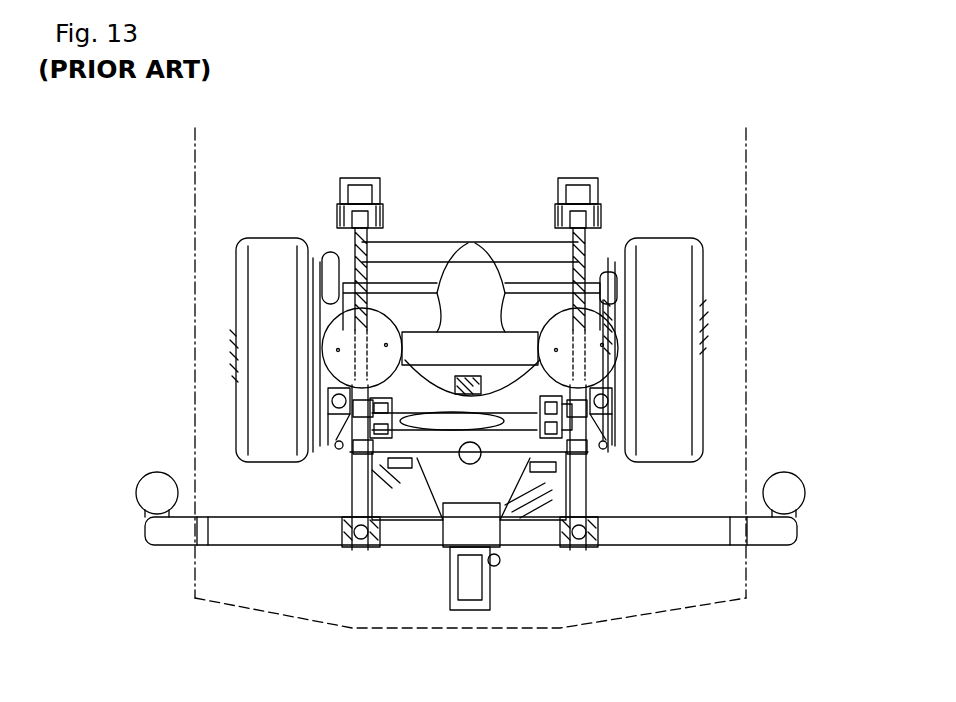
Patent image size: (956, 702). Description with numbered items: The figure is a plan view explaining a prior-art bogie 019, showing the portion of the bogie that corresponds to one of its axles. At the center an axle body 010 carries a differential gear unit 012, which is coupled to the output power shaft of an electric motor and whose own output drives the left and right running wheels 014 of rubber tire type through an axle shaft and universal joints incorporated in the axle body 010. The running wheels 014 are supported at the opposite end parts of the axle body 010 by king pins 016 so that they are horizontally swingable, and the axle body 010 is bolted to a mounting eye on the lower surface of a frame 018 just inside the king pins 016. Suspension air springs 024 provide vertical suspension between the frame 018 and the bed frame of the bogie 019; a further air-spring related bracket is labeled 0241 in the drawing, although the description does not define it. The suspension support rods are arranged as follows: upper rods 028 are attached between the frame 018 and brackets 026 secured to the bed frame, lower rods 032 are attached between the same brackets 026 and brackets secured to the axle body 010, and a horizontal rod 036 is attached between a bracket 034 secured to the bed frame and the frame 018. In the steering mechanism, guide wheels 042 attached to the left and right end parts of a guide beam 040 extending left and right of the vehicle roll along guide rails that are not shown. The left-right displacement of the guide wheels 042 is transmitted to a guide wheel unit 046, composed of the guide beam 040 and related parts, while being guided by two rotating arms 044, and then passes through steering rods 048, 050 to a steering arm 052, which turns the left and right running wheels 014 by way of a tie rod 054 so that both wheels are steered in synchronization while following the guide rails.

The axle body 010 is at (412, 330).
The differential gear unit 012 is at (505, 305).
The running wheels 014 is at (255, 240).
The king pins 016 is at (305, 360).
The frame 018 is at (346, 452).
The bogie 019 is at (232, 603).
The suspension air springs 024 is at (490, 336).
The axle bracket 0241 is at (462, 412).
The brackets 026 is at (348, 178).
The upper rods 028 is at (370, 240).
The lower rods 032 is at (592, 242).
The bracket 034 is at (612, 424).
The horizontal rod 036 is at (525, 405).
The guide beam 040 is at (282, 548).
The guide wheels 042 is at (146, 480).
The rotating arms 044 is at (347, 482).
The guide wheel unit 046 is at (406, 548).
The steering rod 048 is at (508, 552).
The steering rod 050 is at (522, 492).
The steering arm 052 is at (628, 425).
The tie rod 054 is at (540, 310).